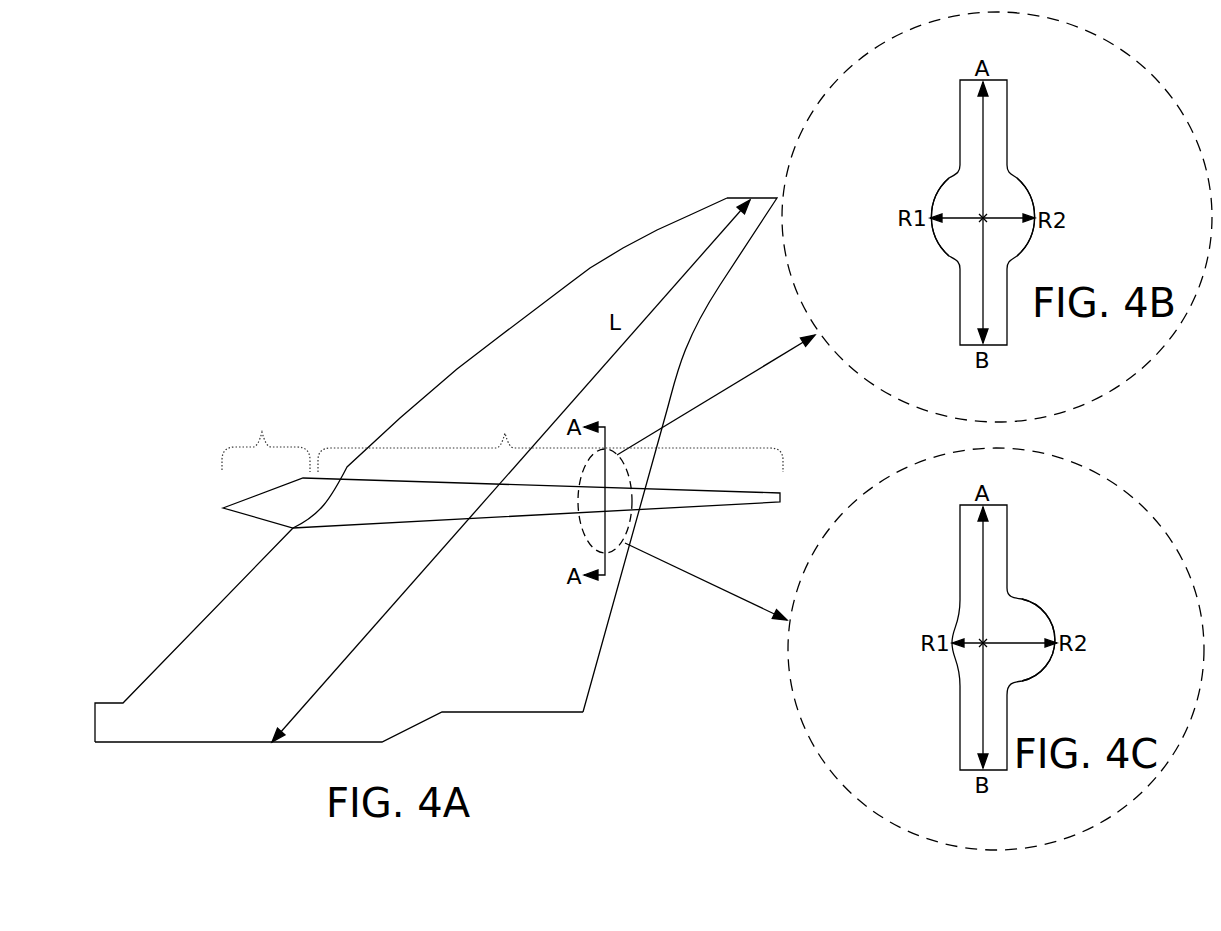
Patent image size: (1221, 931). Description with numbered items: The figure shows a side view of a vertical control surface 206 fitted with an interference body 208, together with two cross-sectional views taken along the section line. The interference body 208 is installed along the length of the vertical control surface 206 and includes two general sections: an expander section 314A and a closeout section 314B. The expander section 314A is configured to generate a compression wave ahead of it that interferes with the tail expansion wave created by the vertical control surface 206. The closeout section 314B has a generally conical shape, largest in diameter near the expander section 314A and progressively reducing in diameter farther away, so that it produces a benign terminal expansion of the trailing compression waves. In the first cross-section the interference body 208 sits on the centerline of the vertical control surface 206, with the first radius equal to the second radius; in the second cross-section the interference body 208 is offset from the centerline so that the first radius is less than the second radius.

In FIG. 4B, the vertical control surface 206 is at (960, 113).
In FIG. 4C, the vertical control surface 206 is at (960, 538).
In FIG. 4A, the interference body 208 is at (237, 537).
In FIG. 4B, the interference body 208 is at (1020, 184).
In FIG. 4C, the interference body 208 is at (1020, 597).
In FIG. 4A, the expander section 314A is at (266, 435).
In FIG. 4A, the closeout section 314B is at (550, 434).